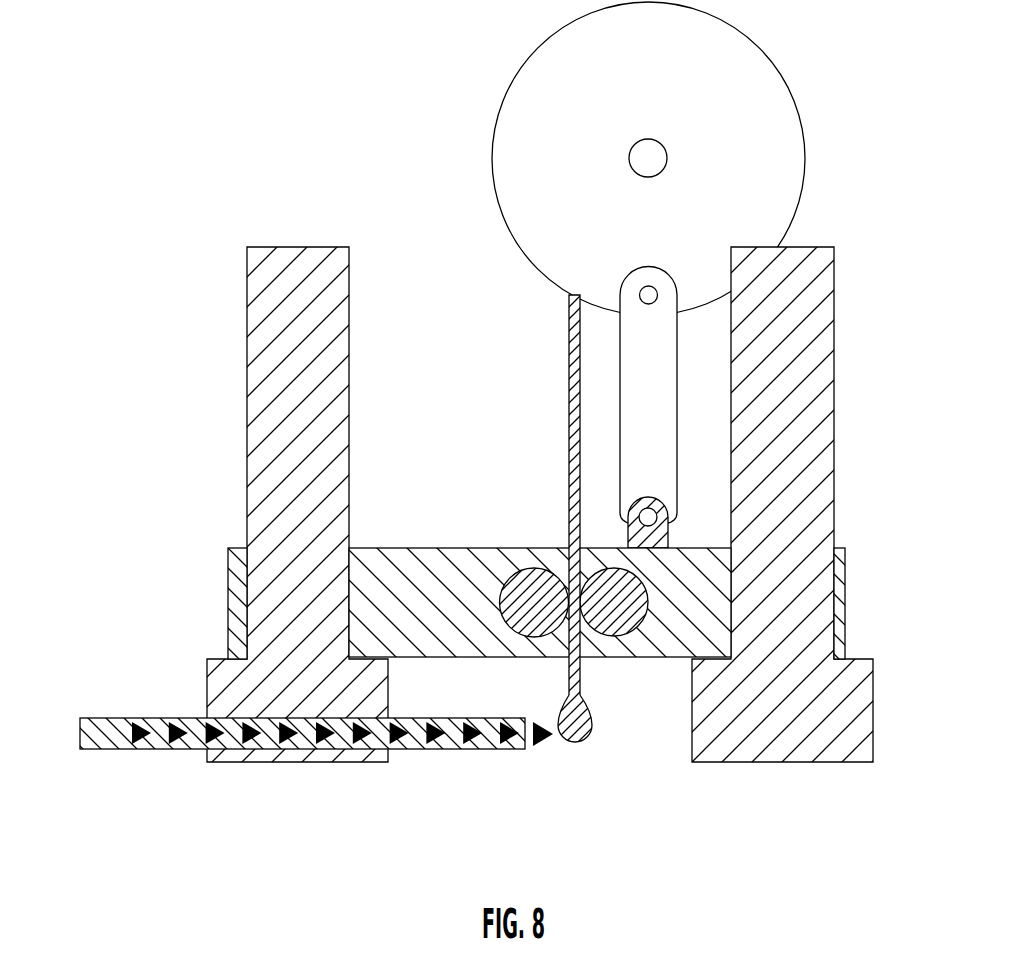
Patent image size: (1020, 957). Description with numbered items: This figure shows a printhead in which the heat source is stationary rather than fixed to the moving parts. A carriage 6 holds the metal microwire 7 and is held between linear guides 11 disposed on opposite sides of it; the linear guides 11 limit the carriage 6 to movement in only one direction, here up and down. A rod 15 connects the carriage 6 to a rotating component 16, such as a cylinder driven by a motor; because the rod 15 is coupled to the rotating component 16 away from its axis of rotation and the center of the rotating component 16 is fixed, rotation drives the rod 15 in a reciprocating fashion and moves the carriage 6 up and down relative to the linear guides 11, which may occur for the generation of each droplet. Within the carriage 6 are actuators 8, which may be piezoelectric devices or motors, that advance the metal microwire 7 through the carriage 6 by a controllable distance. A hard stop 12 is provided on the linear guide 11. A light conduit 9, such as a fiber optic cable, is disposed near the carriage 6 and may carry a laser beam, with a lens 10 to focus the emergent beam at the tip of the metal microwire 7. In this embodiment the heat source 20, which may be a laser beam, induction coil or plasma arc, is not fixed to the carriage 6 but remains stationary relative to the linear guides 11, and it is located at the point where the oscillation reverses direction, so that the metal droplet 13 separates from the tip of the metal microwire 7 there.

The carriage 6 is at (717, 598).
The metal microwire 7 is at (560, 406).
The actuators 8 is at (630, 595).
The light conduit 9 is at (449, 732).
The lens 10 is at (527, 750).
The linear guides 11 is at (290, 489).
The hard stop 12 is at (237, 657).
The metal droplet 13 is at (580, 742).
The rod 15 is at (630, 337).
The rotating component 16 is at (583, 249).
The heat source 20 is at (112, 720).